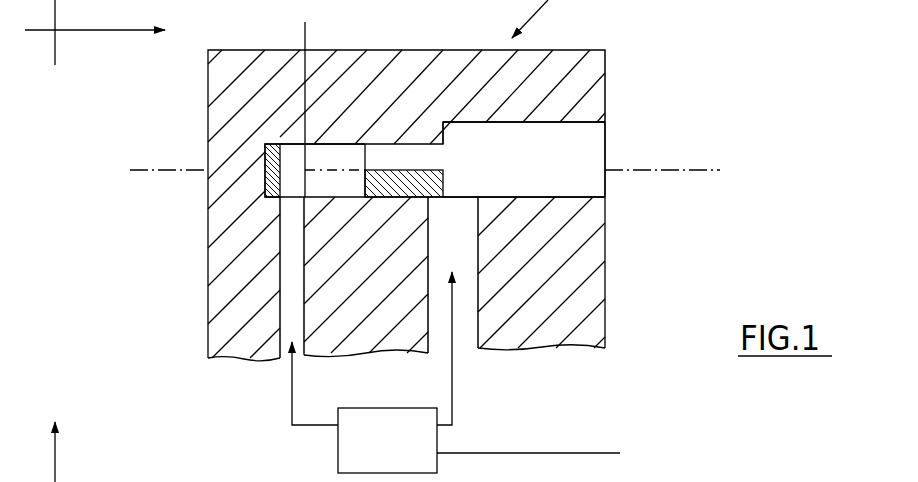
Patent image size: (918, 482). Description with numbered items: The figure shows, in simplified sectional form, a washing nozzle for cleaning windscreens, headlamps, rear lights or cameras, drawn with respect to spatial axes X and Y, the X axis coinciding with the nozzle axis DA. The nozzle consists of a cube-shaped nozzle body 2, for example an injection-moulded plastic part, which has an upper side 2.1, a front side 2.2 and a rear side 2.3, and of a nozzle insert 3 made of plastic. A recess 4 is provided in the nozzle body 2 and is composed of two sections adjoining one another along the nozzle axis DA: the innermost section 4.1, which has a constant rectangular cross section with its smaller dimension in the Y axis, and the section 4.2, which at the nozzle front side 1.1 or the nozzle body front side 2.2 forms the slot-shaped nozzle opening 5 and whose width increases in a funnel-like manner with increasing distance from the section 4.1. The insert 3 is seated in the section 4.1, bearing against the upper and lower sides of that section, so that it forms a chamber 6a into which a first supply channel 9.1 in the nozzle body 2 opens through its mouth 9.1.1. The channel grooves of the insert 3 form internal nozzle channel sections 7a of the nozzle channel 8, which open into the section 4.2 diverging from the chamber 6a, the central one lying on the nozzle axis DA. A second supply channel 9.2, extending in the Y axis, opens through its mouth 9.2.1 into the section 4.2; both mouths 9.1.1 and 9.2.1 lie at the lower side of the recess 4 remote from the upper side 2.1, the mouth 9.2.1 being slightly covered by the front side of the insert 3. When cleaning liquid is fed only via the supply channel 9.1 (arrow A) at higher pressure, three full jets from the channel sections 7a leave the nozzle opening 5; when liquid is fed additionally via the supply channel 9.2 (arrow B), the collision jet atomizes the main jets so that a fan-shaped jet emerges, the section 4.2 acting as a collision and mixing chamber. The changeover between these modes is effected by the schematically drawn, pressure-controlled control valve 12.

The nozzle front side 1.1 is at (663, 114).
The nozzle body 2 is at (218, 233).
The nozzle body upper side 2.1 is at (405, 50).
The nozzle body front side 2.2 is at (605, 288).
The nozzle body rear side 2.3 is at (208, 152).
The nozzle insert 3 is at (270, 145).
The recess 4 is at (401, 143).
The section of recess 4.1 is at (334, 152).
The section of recess 4.2 is at (590, 183).
The nozzle opening 5 is at (605, 135).
The chamber 6a is at (305, 22).
The internal nozzle channel section 7a is at (446, 147).
The nozzle channel 8 is at (531, 142).
The supply channel 9.1 is at (283, 307).
The opening or mouth of supply channel 9.1.1 is at (266, 198).
The supply channel 9.2 is at (466, 229).
The opening or mouth of supply channel 9.2.1 is at (454, 193).
The control valve 12 is at (428, 440).
The main stream A is at (292, 388).
The collision stream B is at (452, 373).
The nozzle axis DA is at (684, 170).
The spatial axis X is at (95, 34).
The spatial axis Y is at (70, 452).